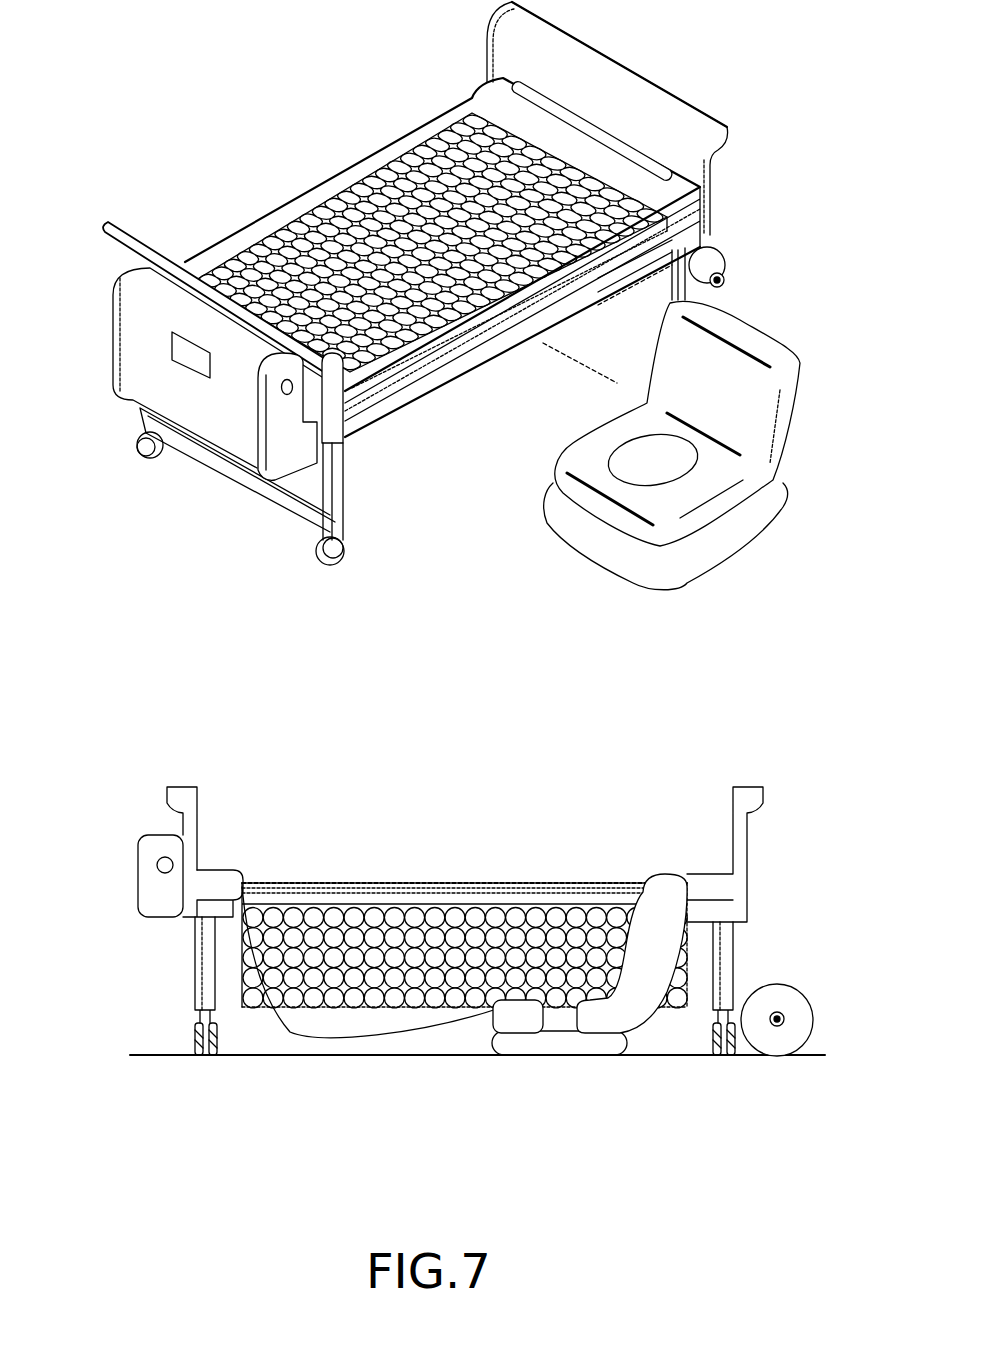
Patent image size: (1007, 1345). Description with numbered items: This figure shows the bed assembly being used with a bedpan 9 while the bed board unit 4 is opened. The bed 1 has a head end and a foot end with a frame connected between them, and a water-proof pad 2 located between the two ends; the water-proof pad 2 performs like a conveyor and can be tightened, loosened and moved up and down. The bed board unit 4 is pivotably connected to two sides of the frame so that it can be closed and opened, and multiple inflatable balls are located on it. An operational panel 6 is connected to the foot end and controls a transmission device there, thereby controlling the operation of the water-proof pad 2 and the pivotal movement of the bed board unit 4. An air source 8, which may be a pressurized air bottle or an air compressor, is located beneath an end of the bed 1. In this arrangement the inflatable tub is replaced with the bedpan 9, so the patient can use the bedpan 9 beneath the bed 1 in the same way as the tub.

The bed 1 is at (308, 158).
The water-proof pad 2 is at (600, 130).
The bed board unit 4 is at (405, 140).
The operational panel 6 is at (173, 352).
The air source 8 is at (708, 250).
The bedpan 9 is at (740, 542).